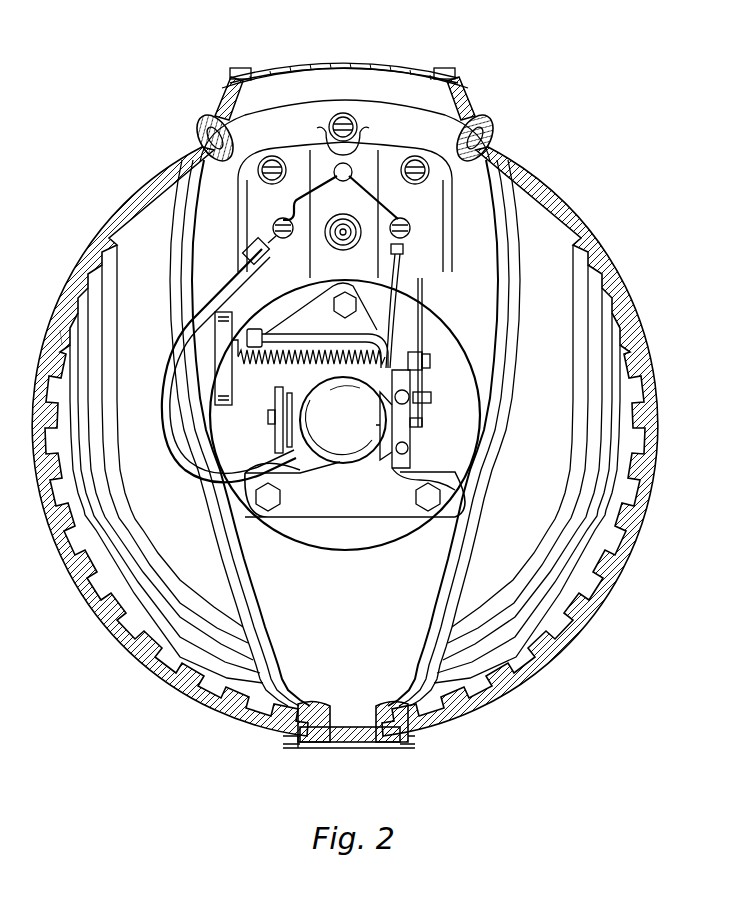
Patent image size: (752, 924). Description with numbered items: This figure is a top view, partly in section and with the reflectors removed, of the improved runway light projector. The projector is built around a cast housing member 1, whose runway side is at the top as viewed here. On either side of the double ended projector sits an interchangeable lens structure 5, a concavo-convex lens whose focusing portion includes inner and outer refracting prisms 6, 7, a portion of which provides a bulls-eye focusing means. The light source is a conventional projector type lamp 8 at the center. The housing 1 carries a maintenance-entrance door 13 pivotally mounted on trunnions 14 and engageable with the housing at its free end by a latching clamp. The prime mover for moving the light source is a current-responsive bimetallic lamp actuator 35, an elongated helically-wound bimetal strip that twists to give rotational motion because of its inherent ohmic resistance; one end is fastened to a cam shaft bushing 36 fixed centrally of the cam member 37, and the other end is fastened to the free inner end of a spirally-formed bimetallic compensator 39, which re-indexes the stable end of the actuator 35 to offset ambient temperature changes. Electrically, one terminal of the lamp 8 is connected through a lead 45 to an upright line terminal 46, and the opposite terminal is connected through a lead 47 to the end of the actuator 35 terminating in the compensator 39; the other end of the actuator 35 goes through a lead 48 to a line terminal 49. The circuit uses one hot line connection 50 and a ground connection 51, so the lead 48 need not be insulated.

The cast housing member 1 is at (335, 745).
The interchangeable lens structure 5 is at (100, 628).
The inner refracting prism 6 is at (110, 580).
The outer refracting prism 7 is at (60, 551).
The projector type lamp 8 is at (327, 420).
The maintenance-entrance door 13 is at (283, 68).
The trunnions 14 is at (233, 68).
The current-responsive bimetallic lamp actuator 35 is at (262, 362).
The cam shaft bushing 36 is at (411, 350).
The cam member 37 is at (424, 289).
The spirally-formed bimetallic compensator 39 is at (232, 403).
The lead 45 is at (162, 375).
The upright line terminal 46 is at (275, 220).
The lead 47 is at (270, 337).
The lead 48 is at (389, 301).
The line terminal 49 is at (407, 226).
The hot line connection 50 is at (308, 197).
The ground connection 51 is at (376, 197).